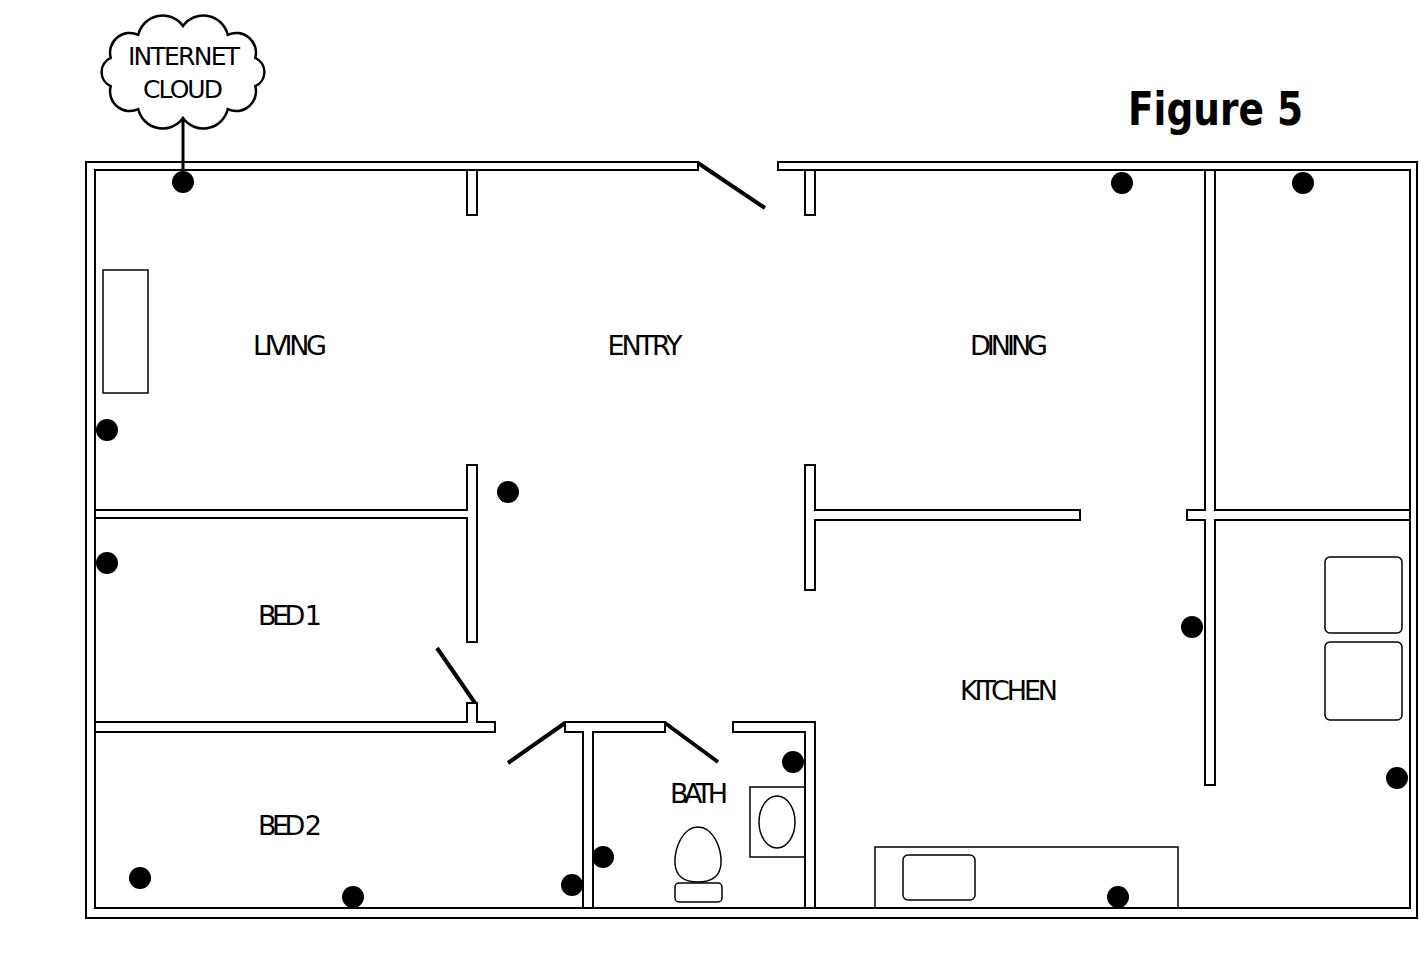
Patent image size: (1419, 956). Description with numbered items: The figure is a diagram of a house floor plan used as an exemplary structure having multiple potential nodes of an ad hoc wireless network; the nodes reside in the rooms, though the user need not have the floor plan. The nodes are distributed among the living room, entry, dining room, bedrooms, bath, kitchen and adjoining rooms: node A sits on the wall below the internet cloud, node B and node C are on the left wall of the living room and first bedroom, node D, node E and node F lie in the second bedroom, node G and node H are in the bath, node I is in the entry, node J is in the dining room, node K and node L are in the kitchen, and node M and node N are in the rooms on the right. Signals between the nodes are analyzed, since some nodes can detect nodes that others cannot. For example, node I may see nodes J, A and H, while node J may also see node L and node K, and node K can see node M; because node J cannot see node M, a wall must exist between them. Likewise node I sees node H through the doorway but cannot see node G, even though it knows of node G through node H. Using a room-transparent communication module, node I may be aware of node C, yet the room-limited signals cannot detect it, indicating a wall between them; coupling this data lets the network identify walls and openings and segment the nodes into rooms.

The node A is at (183, 194).
The node B is at (119, 430).
The node C is at (119, 563).
The node D is at (140, 866).
The node E is at (353, 885).
The node F is at (560, 885).
The node G is at (612, 850).
The node H is at (781, 760).
The node I is at (520, 492).
The node J is at (1122, 195).
The node K is at (1108, 890).
The node L is at (1180, 627).
The node M is at (1385, 778).
The node N is at (1303, 195).